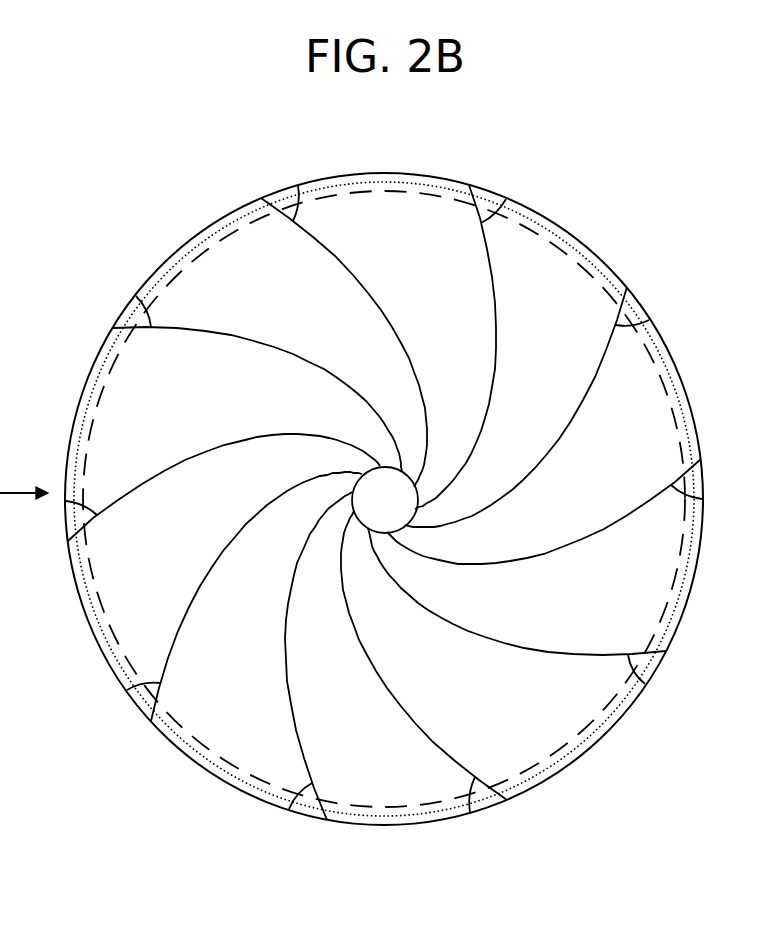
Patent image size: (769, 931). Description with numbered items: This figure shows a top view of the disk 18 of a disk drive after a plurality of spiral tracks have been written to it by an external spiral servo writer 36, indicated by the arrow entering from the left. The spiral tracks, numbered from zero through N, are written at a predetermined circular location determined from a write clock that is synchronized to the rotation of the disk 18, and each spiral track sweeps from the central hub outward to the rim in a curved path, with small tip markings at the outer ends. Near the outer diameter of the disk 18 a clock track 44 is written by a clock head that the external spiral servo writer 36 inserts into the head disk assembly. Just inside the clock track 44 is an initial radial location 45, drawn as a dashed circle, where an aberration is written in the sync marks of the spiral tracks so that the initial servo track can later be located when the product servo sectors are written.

The disk 18 is at (594, 243).
The external spiral servo writer 36 is at (0, 183).
The clock track 44 is at (686, 593).
The initial radial location 45 is at (679, 628).